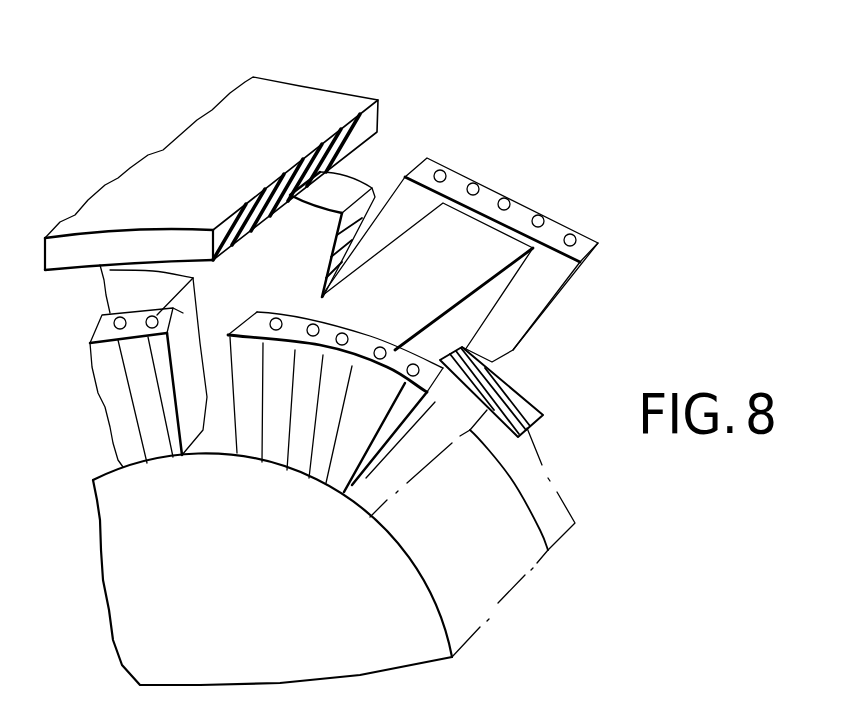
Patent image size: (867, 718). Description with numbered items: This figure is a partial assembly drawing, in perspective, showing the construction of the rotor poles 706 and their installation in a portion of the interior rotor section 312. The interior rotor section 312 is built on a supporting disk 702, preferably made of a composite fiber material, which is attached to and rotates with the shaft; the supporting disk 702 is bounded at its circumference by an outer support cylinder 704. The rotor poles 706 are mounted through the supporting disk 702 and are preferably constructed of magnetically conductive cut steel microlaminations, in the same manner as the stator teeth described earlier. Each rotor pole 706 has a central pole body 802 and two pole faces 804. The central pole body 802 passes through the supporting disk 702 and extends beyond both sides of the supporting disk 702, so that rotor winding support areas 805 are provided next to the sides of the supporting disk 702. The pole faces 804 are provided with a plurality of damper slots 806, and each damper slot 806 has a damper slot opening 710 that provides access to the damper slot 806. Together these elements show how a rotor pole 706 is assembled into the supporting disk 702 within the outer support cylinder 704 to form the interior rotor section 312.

The interior rotor section 312 is at (215, 146).
The outer support cylinder 704 is at (303, 78).
The supporting disk 702 is at (358, 173).
The rotor pole 706 is at (477, 161).
The pole face 804 is at (527, 196).
The central pole body 802 is at (404, 278).
The rotor winding support area 805 is at (372, 326).
The damper slot 806 is at (416, 357).
The damper slot opening 710 is at (390, 410).